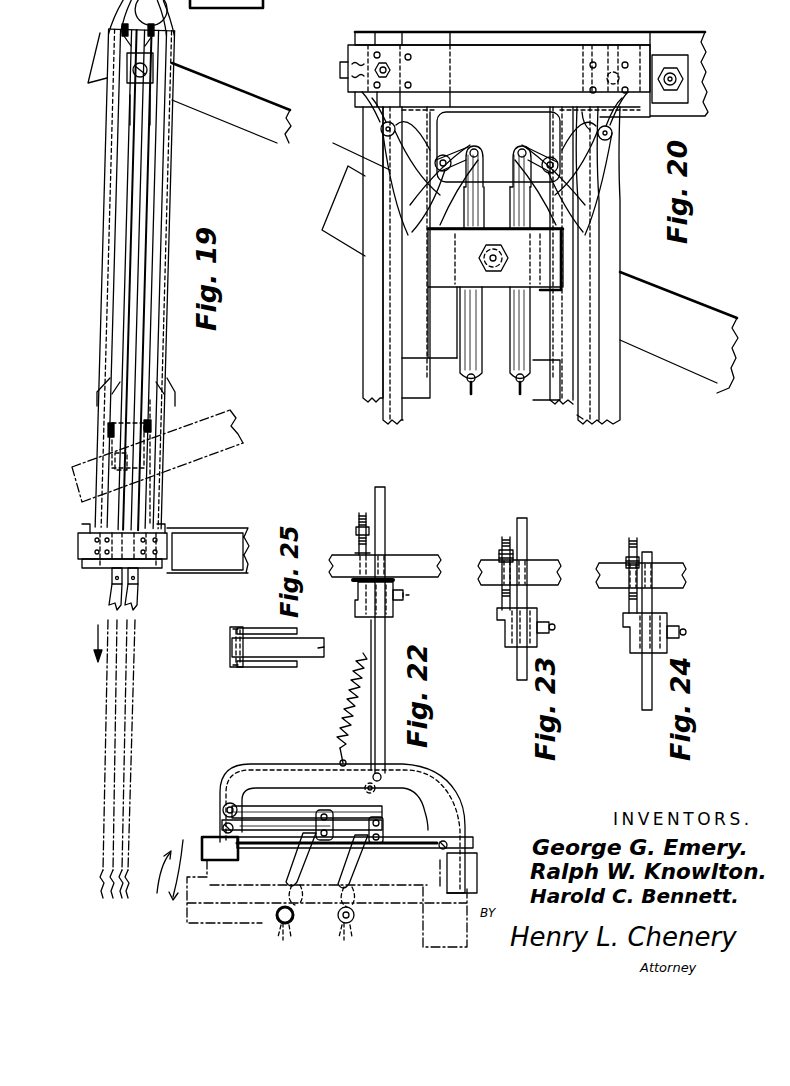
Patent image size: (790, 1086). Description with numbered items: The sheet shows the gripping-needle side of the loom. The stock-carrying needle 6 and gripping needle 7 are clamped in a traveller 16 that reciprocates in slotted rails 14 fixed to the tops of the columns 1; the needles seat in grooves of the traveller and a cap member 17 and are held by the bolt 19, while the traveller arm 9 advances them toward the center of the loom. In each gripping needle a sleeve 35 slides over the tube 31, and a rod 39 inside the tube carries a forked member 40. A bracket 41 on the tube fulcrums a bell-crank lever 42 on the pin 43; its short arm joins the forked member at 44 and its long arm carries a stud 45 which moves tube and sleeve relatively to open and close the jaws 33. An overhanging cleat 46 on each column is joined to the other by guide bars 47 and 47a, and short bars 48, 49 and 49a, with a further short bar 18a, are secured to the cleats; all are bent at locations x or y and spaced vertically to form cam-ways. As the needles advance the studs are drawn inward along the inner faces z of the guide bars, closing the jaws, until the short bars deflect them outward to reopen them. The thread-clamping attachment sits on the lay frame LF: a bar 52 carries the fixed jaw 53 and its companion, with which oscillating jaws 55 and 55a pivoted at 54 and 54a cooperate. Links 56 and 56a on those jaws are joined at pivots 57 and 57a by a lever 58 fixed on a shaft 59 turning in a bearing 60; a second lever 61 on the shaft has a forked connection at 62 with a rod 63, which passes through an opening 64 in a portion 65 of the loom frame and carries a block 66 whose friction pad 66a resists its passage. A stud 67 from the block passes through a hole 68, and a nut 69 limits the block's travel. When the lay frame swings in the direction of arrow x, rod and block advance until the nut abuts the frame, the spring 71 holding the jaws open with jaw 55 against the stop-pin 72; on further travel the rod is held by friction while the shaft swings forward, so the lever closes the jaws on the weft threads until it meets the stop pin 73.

In FIG. 20, the column 1 is at (688, 42).
In FIG. 22, the stock-carrying needle 6 is at (337, 912).
In FIG. 19, the gripping needle 7 is at (127, 232).
In FIG. 22, the gripping needle 7 is at (347, 923).
In FIG. 19, the traveller arm 9 is at (104, 74).
In FIG. 20, the traveller arm 9 is at (345, 215).
In FIG. 20, the slotted rail 14 is at (413, 392).
In FIG. 19, the traveller 16 is at (137, 104).
In FIG. 20, the traveller 16 is at (560, 343).
In FIG. 20, the cap member 17 is at (440, 287).
In FIG. 19, the guide strip 18a is at (140, 505).
In FIG. 19, the bolt 19 is at (136, 73).
In FIG. 20, the bolt 19 is at (490, 267).
In FIG. 20, the tube 31 is at (512, 363).
In FIG. 19, the jaw 33 is at (112, 598).
In FIG. 19, the sleeve 35 is at (138, 598).
In FIG. 20, the rod 39 is at (468, 390).
In FIG. 20, the forked member 40 is at (495, 262).
In FIG. 20, the bracket 41 is at (571, 163).
In FIG. 20, the bell-crank lever 42 is at (552, 156).
In FIG. 20, the pin 43 is at (452, 158).
In FIG. 20, the pivotal connection 44 is at (498, 147).
In FIG. 19, the stud 45 is at (180, 20).
In FIG. 20, the stud 45 is at (386, 133).
In FIG. 19, the overhanging cleat 46 is at (80, 545).
In FIG. 20, the overhanging cleat 46 is at (483, 72).
In FIG. 19, the guide bar 47 is at (113, 292).
In FIG. 20, the guide bar 47 is at (397, 387).
In FIG. 19, the guide bar 47a is at (153, 330).
In FIG. 20, the guide bar 47a is at (580, 420).
In FIG. 19, the short bar 48 is at (66, 508).
In FIG. 20, the short bar 49 is at (451, 144).
In FIG. 20, the short bar 49a is at (590, 128).
In FIG. 22, the bar 52 is at (283, 815).
In FIG. 22, the fixed jaw 53 is at (324, 842).
In FIG. 22, the pivot point 54 is at (327, 807).
In FIG. 22, the pivot point 54a is at (377, 847).
In FIG. 22, the oscillating jaw 55 is at (287, 883).
In FIG. 22, the oscillating jaw 55a is at (366, 862).
In FIG. 22, the link 56 is at (340, 810).
In FIG. 22, the link 56a is at (384, 830).
In FIG. 22, the pivotal point 57 is at (360, 830).
In FIG. 22, the pivotal point 57a is at (384, 762).
In FIG. 25, the lever 58 is at (280, 667).
In FIG. 22, the lever 58 is at (307, 814).
In FIG. 25, the shaft 59 is at (241, 664).
In FIG. 22, the shaft 59 is at (257, 830).
In FIG. 25, the bearing 60 is at (231, 644).
In FIG. 22, the bearing 60 is at (223, 808).
In FIG. 25, the lever 61 is at (258, 627).
In FIG. 22, the lever 61 is at (346, 758).
In FIG. 22, the forked connection 62 is at (378, 780).
In FIG. 22, the rod 63 is at (385, 662).
In FIG. 23, the rod 63 is at (524, 543).
In FIG. 24, the rod 63 is at (641, 677).
In FIG. 22, the opening 64 is at (391, 578).
In FIG. 22, the loom frame portion 65 is at (418, 565).
In FIG. 23, the loom frame portion 65 is at (550, 570).
In FIG. 24, the loom frame portion 65 is at (663, 570).
In FIG. 22, the block 66 is at (360, 608).
In FIG. 23, the block 66 is at (507, 634).
In FIG. 24, the block 66 is at (625, 638).
In FIG. 22, the friction pad 66a is at (400, 598).
In FIG. 22, the stud 67 is at (360, 545).
In FIG. 23, the stud 67 is at (501, 597).
In FIG. 24, the stud 67 is at (628, 600).
In FIG. 22, the hole 68 is at (356, 553).
In FIG. 22, the nut 69 is at (361, 526).
In FIG. 23, the nut 69 is at (502, 556).
In FIG. 24, the nut 69 is at (628, 558).
In FIG. 22, the spring 71 is at (349, 704).
In FIG. 22, the stop-pin 72 is at (275, 848).
In FIG. 22, the stop pin 73 is at (367, 792).
In FIG. 19, the bend location and arrow x is at (120, 28).
In FIG. 20, the bend location and arrow x is at (638, 233).
In FIG. 22, the bend location and arrow x is at (169, 878).
In FIG. 19, the bend location y is at (106, 394).
In FIG. 22, the bend location y is at (165, 860).
In FIG. 20, the inner face z is at (413, 340).
In FIG. 25, the lay frame LF is at (330, 641).
In FIG. 22, the lay frame LF is at (432, 776).